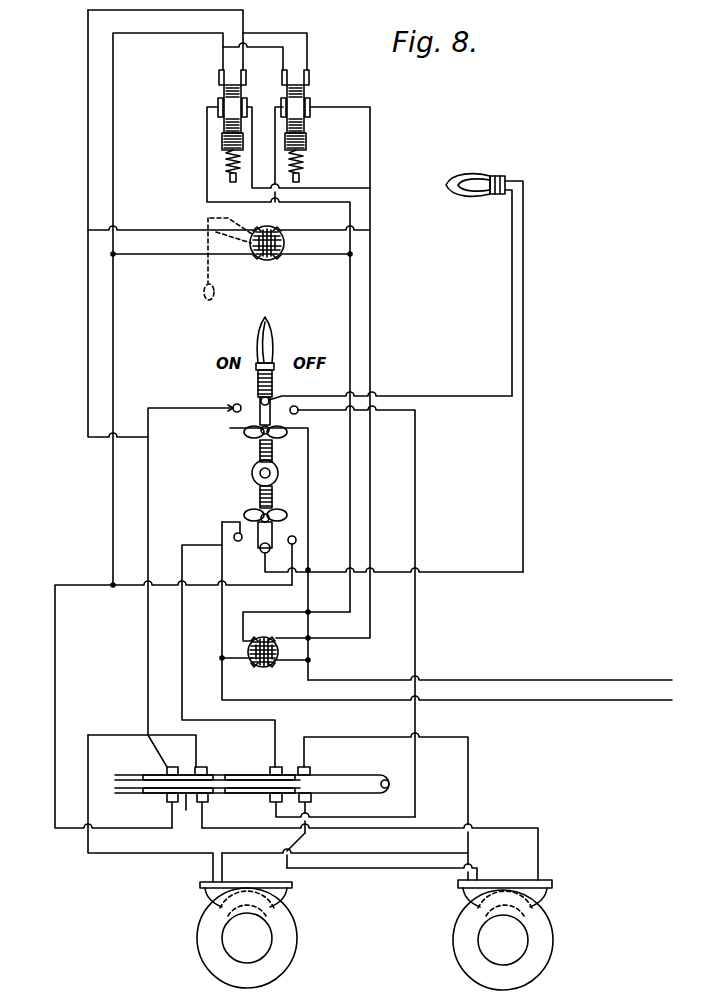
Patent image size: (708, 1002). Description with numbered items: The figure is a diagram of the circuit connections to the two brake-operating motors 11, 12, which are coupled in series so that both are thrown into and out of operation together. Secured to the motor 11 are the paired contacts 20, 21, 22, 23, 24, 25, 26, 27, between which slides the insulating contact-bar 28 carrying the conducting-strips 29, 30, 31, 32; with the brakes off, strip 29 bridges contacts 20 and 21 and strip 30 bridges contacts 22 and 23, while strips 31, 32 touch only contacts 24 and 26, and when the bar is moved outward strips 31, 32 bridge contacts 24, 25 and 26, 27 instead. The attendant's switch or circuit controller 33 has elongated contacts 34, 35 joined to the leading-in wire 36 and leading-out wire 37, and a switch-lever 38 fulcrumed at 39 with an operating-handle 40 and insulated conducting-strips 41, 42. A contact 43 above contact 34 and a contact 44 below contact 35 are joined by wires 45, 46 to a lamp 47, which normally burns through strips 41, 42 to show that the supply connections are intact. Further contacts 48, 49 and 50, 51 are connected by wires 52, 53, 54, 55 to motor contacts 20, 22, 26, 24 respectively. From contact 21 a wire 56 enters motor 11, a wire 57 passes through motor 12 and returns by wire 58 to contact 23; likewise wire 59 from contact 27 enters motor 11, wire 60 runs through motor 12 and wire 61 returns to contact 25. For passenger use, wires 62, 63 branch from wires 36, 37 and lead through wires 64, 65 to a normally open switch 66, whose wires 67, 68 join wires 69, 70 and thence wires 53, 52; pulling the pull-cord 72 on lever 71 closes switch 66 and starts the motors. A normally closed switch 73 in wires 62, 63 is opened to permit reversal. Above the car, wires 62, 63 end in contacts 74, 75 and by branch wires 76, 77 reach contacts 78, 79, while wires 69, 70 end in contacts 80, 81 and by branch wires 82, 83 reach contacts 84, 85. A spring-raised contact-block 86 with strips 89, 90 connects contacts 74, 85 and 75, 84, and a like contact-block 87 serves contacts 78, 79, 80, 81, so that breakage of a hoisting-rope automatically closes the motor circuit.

The motor 11 is at (200, 895).
The motor 12 is at (548, 900).
The contact 20 is at (165, 767).
The contact 21 is at (205, 767).
The contact 22 is at (167, 802).
The contact 23 is at (208, 802).
The contact 24 is at (270, 767).
The contact 25 is at (310, 767).
The contact 26 is at (272, 802).
The contact 27 is at (312, 802).
The contact-bar 28 is at (252, 783).
The conducting-strip 29 is at (185, 775).
The conducting-strip 30 is at (178, 811).
The conducting-strip 31 is at (290, 775).
The conducting-strip 32 is at (260, 799).
The switch or circuit controller 33 is at (231, 458).
The contact 34 is at (258, 552).
The contact 35 is at (272, 508).
The leading-in wire 36 is at (318, 462).
The leading-out wire 37 is at (446, 622).
The switch-lever 38 is at (272, 335).
The fulcrum-point 39 is at (252, 476).
The operating-handle 40 is at (277, 423).
The conducting-strip 41 is at (261, 400).
The conducting-strip 42 is at (272, 514).
The contact 43 is at (294, 406).
The contact 44 is at (262, 552).
The wire 45 is at (466, 398).
The wire 46 is at (394, 562).
The lamp 47 is at (490, 168).
The contact 48 is at (232, 406).
The contact 49 is at (296, 541).
The contact 50 is at (298, 413).
The contact 51 is at (234, 535).
The wire 52 is at (148, 500).
The wire 53 is at (55, 745).
The wire 54 is at (415, 632).
The wire 55 is at (221, 656).
The wire 56 is at (150, 808).
The wire 57 is at (382, 875).
The wire 58 is at (370, 844).
The wire 59 is at (300, 840).
The wire 60 is at (345, 859).
The wire 61 is at (468, 775).
The wire 62 is at (293, 672).
The wire 63 is at (350, 340).
The wire 64 is at (325, 221).
The wire 65 is at (316, 263).
The switch 66 is at (267, 255).
The wire 67 is at (182, 265).
The wire 68 is at (170, 221).
The wire 69 is at (113, 316).
The wire 70 is at (88, 316).
The lever 71 is at (230, 245).
The pull-cord 72 is at (206, 300).
The switch 73 is at (266, 649).
The contact 74 is at (310, 98).
The contact 75 is at (281, 102).
The branch wire 76 is at (308, 154).
The branch wire 77 is at (207, 186).
The contact 78 is at (245, 120).
The contact 79 is at (218, 100).
The contact 80 is at (219, 72).
The contact 81 is at (252, 52).
The branch wire 82 is at (255, 47).
The branch wire 83 is at (307, 45).
The contact 84 is at (287, 82).
The contact 85 is at (309, 72).
The contact-block 86 is at (303, 146).
The contact-block 87 is at (222, 140).
The conducting-strip 89 is at (306, 127).
The conducting-strip 90 is at (288, 128).